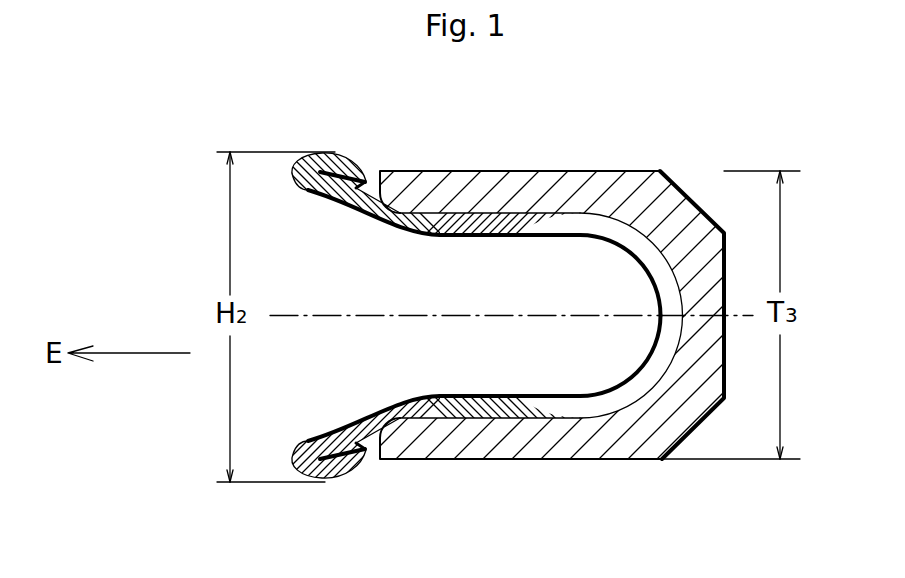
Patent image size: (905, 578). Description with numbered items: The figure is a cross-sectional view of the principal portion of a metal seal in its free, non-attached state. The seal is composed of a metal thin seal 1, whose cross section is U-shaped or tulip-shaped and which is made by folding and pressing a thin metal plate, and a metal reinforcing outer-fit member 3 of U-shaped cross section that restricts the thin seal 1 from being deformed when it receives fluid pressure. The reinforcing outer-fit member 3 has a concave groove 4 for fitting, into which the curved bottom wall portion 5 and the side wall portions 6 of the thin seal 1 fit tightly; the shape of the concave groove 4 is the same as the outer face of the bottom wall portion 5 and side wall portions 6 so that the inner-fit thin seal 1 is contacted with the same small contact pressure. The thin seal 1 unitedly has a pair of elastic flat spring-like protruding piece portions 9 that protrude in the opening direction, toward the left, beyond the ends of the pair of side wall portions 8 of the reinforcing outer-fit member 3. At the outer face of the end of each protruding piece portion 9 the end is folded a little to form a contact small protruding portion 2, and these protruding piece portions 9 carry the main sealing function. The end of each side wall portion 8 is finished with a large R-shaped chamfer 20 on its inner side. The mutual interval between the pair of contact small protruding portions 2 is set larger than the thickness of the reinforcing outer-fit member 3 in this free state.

The metal thin seal 1 is at (505, 307).
The contact small protruding portion 2 is at (345, 150).
The metal reinforcing outer-fit member 3 is at (699, 195).
The concave groove for fitting 4 is at (574, 229).
The curved bottom wall portion 5 is at (648, 300).
The side wall portion 6 is at (470, 307).
The side wall portion 8 is at (496, 200).
The elastic flat spring-like protruding piece portion 9 is at (377, 232).
The large R-shaped chamfer 20 is at (394, 190).